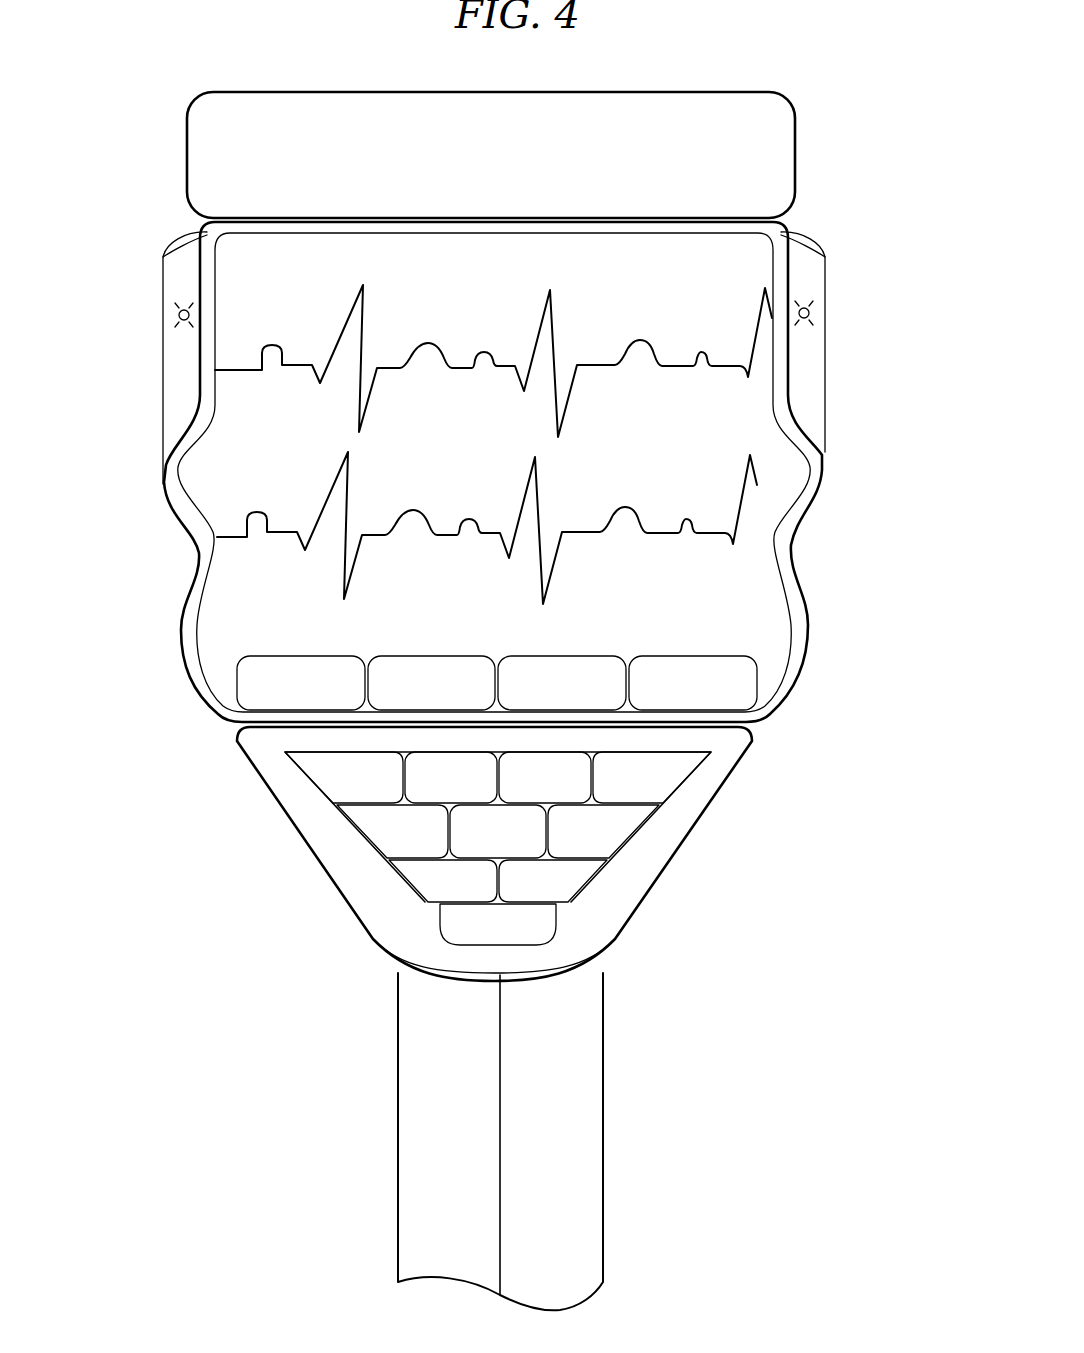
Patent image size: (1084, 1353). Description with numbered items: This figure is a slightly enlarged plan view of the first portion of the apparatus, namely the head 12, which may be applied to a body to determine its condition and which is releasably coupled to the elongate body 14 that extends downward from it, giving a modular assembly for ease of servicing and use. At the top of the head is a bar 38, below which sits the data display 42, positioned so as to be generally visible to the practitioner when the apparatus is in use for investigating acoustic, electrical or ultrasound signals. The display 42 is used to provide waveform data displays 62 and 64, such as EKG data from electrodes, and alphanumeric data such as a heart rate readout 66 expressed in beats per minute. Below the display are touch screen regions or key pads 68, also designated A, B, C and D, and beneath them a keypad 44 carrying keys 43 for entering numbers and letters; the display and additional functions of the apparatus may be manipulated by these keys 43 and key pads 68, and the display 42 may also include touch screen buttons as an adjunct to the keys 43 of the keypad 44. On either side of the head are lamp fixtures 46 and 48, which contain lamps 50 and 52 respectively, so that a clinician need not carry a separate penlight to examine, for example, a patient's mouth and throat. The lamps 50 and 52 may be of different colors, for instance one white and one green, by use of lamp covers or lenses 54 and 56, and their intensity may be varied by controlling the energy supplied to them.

The head 12 is at (811, 559).
The elongate body 14 is at (603, 1054).
The top bar / paddle 38 is at (793, 108).
The data display 42 is at (240, 579).
The keys 43 is at (613, 846).
The keypad 44 is at (736, 758).
The lamp fixture 46 is at (163, 301).
The lamp fixture 48 is at (826, 293).
The lamp 50 is at (186, 325).
The lamp 52 is at (806, 325).
The lamp cover or lens 54 is at (162, 260).
The lamp cover or lens 56 is at (827, 258).
The waveform data display 62 is at (363, 312).
The waveform data display 64 is at (348, 498).
The heart rate readout 66 is at (645, 257).
The key pads 68 is at (438, 657).